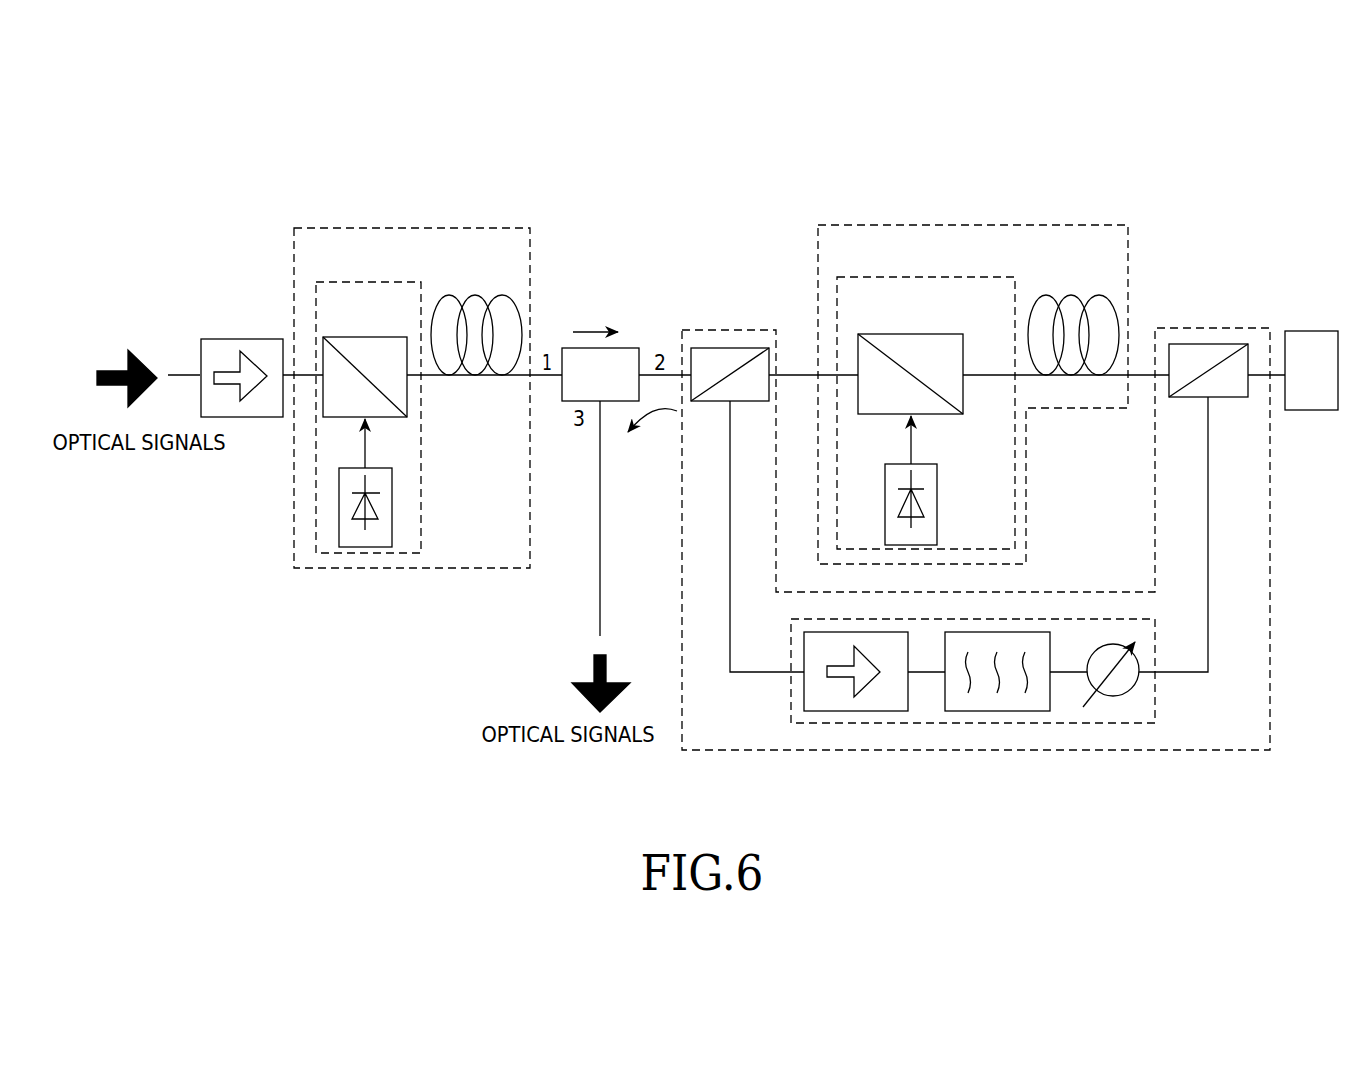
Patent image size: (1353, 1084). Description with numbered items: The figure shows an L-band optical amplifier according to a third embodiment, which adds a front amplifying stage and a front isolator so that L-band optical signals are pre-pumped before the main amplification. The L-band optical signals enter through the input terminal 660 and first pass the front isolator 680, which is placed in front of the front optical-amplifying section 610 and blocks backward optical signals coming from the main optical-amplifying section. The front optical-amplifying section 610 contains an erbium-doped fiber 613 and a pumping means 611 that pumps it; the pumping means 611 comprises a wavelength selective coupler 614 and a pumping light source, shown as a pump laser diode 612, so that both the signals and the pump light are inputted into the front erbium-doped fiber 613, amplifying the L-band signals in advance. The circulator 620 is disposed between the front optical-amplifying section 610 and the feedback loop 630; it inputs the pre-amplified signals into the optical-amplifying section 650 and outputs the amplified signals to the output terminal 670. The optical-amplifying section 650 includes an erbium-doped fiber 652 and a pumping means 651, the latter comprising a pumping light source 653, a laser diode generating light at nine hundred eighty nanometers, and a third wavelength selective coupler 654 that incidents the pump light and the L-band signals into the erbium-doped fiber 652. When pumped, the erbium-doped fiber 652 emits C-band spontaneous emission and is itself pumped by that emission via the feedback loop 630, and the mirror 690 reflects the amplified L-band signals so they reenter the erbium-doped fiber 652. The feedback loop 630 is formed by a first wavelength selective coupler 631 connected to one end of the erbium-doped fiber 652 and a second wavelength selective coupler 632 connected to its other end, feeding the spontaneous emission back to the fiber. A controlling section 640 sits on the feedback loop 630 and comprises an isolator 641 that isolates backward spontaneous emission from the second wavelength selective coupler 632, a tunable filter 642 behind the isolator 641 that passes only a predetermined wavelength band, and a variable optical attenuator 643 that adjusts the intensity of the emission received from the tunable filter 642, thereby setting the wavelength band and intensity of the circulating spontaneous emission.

The front optical-amplifying section 610 is at (390, 223).
The pumping means 611 is at (345, 553).
The first pump laser diode 612 is at (392, 507).
The erbium-doped fiber 613 is at (500, 295).
The wavelength selective coupler 614 is at (362, 337).
The circulator 620 is at (630, 346).
The feedback loop 630 is at (1280, 596).
The first wavelength selective coupler 631 is at (727, 348).
The second wavelength selective coupler 632 is at (1208, 344).
The controlling section 640 is at (1166, 639).
The isolator 641 is at (855, 711).
The tunable filter 642 is at (990, 711).
The variable optical attenuator 643 is at (1128, 695).
The optical-amplifying section 650 is at (977, 219).
The pumping means 651 is at (861, 274).
The erbium-doped fiber 652 is at (1097, 292).
The pumping light source 653 is at (937, 505).
The third wavelength selective coupler 654 is at (908, 334).
The input terminal 660 is at (188, 375).
The output terminal 670 is at (600, 593).
The front isolator 680 is at (245, 337).
The mirror 690 is at (1316, 331).